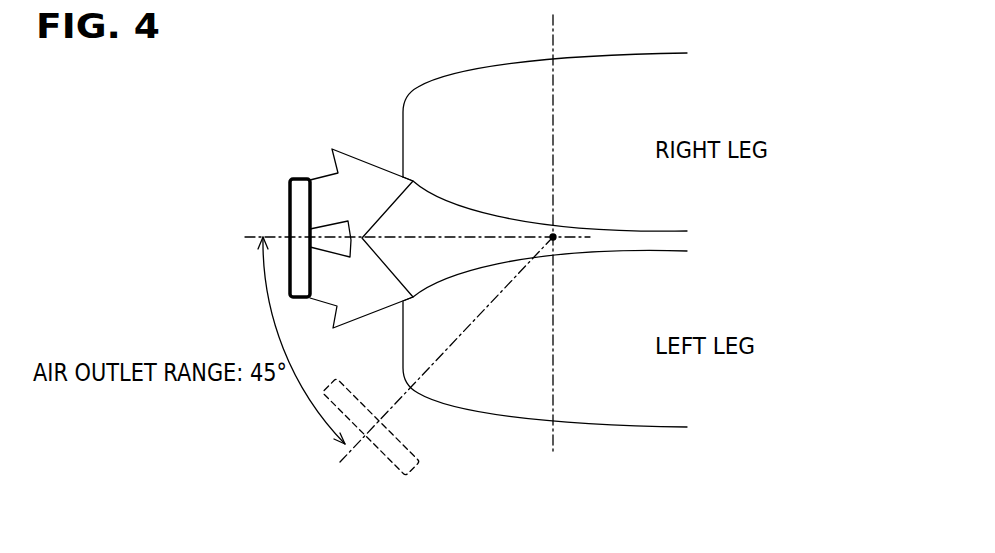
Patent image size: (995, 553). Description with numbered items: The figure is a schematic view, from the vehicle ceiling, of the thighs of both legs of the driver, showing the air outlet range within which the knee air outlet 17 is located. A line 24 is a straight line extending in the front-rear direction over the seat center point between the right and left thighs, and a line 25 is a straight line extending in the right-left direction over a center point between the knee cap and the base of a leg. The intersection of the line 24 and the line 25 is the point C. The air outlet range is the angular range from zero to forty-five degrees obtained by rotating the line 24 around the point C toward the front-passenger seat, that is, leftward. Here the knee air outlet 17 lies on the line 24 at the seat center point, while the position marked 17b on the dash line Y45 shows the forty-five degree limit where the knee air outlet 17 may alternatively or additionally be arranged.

The knee air outlet 17 is at (301, 193).
The knee air outlet position at 45 degrees 17b is at (378, 450).
The line toward the front-passenger seat 24 is at (272, 233).
The line in the right-left direction 25 is at (553, 33).
The point C is at (553, 237).
The dash line Y45 is at (403, 397).